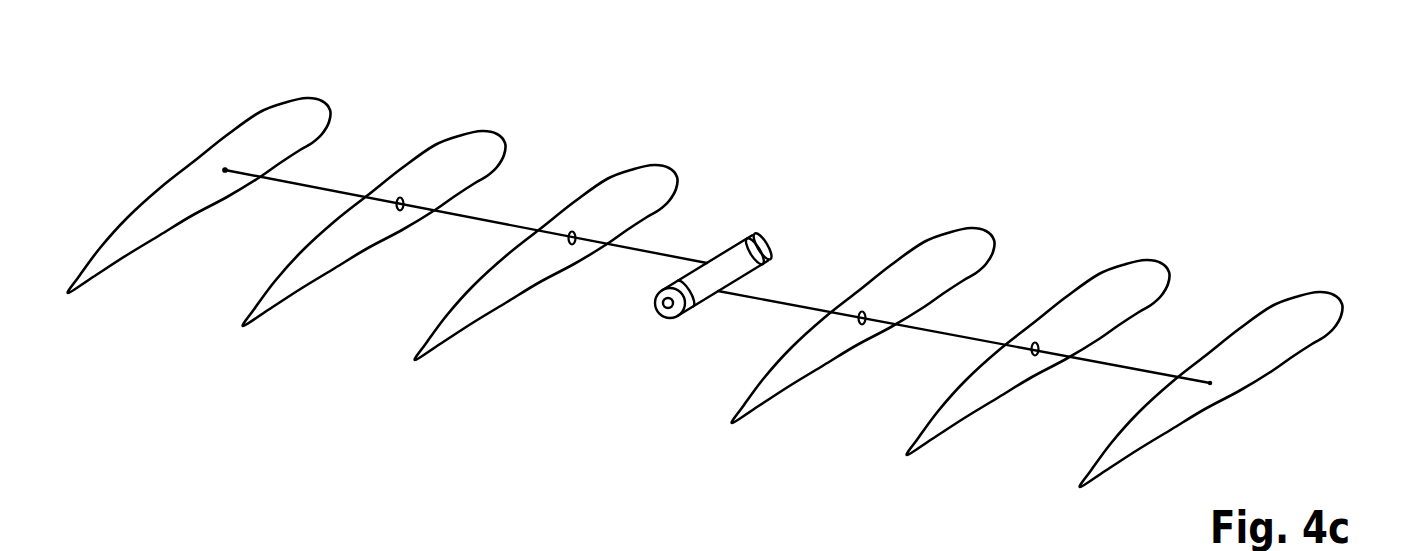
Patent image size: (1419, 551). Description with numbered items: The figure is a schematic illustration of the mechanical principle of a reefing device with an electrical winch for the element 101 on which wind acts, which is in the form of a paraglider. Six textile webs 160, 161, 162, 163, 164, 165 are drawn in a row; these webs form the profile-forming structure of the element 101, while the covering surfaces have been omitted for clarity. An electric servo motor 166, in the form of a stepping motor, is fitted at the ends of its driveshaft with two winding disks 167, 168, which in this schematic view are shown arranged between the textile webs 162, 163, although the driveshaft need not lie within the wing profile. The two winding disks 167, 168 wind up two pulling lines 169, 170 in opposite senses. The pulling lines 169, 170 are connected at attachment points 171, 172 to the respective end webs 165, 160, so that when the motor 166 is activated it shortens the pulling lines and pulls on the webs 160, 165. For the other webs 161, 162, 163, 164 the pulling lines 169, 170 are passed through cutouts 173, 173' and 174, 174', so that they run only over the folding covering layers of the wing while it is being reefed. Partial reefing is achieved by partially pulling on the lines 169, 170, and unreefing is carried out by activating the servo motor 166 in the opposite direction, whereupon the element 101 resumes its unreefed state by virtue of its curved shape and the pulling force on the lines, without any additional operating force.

The element on which wind acts 101 is at (172, 356).
The textile web 160 is at (1315, 305).
The textile web 161 is at (1143, 278).
The textile web 162 is at (967, 243).
The textile web 163 is at (647, 180).
The textile web 164 is at (473, 148).
The textile web 165 is at (302, 115).
The electric servo motor 166 is at (723, 282).
The winding disk 167 is at (657, 313).
The winding disk 168 is at (767, 243).
The pulling line 169 is at (961, 337).
The pulling line 170 is at (493, 222).
The attachment point 171 is at (225, 170).
The attachment point 172 is at (1210, 383).
The cutout 173 is at (935, 307).
The cutout 173' is at (1113, 339).
The cutout 174 is at (639, 231).
The cutout 174' is at (467, 194).